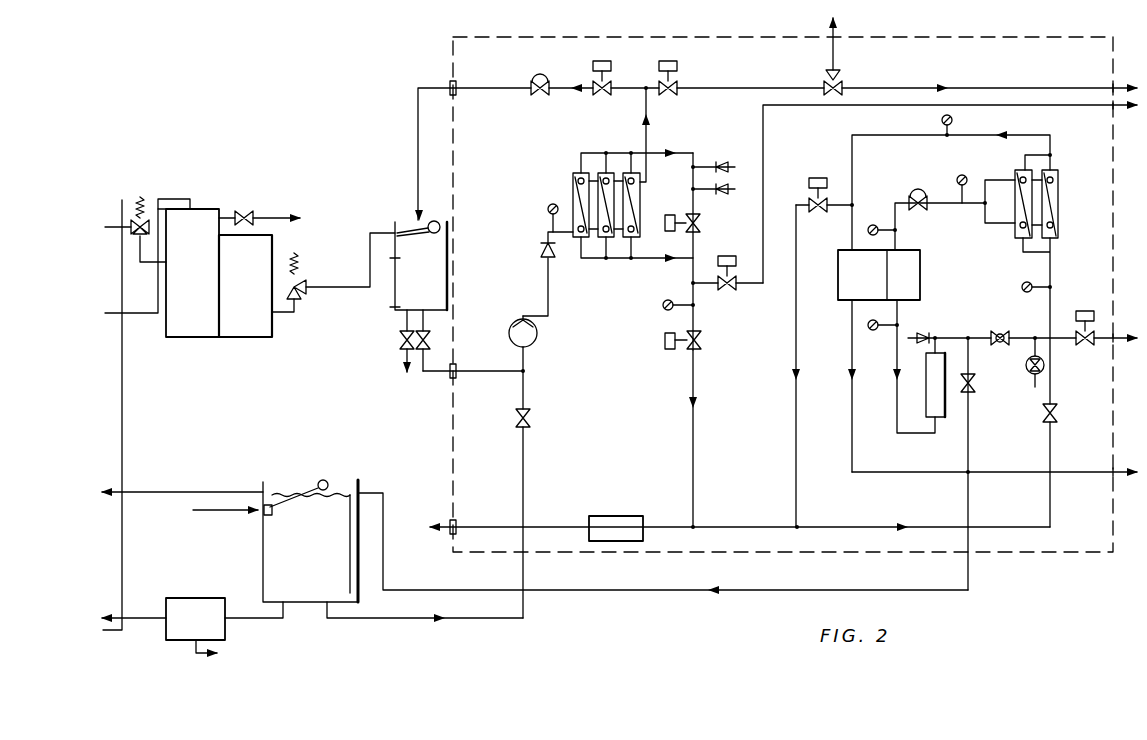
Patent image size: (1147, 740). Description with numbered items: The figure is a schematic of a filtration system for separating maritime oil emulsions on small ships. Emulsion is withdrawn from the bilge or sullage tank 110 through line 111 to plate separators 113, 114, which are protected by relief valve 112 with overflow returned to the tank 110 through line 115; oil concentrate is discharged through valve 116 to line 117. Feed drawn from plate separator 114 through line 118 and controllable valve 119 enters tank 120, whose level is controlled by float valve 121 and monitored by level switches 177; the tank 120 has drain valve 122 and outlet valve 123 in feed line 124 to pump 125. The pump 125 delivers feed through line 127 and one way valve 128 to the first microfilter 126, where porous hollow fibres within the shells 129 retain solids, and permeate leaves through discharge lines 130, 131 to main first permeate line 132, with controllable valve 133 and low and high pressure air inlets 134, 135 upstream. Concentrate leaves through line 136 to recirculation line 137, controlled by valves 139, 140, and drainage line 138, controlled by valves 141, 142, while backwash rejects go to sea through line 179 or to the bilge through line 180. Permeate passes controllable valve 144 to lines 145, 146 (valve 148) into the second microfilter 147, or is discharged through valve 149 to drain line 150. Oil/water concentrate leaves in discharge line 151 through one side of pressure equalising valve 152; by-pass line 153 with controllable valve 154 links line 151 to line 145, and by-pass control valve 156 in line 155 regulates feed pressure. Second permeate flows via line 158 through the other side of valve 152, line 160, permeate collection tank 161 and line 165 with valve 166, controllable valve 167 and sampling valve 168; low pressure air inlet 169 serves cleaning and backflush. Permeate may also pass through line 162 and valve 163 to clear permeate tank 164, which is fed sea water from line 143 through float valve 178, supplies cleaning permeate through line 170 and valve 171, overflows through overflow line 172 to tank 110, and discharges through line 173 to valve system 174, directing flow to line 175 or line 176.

The tank 110 is at (123, 434).
The line 111 is at (190, 199).
The relief valve 112 is at (147, 220).
The plate separator 113 is at (190, 340).
The plate separator 114 is at (240, 340).
The line 115 is at (112, 226).
The valve 116 is at (246, 210).
The line 117 is at (290, 213).
The line 118 is at (288, 314).
The controllable valve 119 is at (301, 278).
The tank 120 is at (395, 307).
The float valve 121 is at (439, 222).
The drain valve 122 is at (402, 352).
The outlet valve 123 is at (432, 340).
The feed line 124 is at (478, 378).
The pump 125 is at (537, 342).
The first microfilter 126 is at (550, 171).
The line 127 is at (548, 292).
The one way valve 128 is at (540, 250).
The shells 129 is at (638, 222).
The discharge line 130 is at (655, 150).
The discharge line 131 is at (636, 262).
The main first permeate line 132 is at (700, 384).
The controllable valve 133 is at (700, 224).
The low pressure air inlet 134 is at (708, 165).
The high pressure air inlet 135 is at (716, 197).
The line 136 is at (646, 108).
The recirculation line 137 is at (468, 88).
The drainage line 138 is at (725, 88).
The valve 139 is at (612, 80).
The valve 140 is at (546, 78).
The valve 141 is at (676, 80).
The valve 142 is at (843, 80).
The line 143 is at (193, 508).
The controllable valve 144 is at (688, 348).
The line 145 is at (723, 527).
The line 146 is at (830, 527).
The second microfilter 147 is at (1068, 215).
The valve 148 is at (1060, 416).
The valve 149 is at (728, 295).
The drain line 150 is at (768, 135).
The discharge line 151 is at (875, 135).
The pressure equalising valve 152 is at (838, 270).
The by-pass line 153 is at (798, 325).
The controllable valve 154 is at (808, 203).
The line 155 is at (667, 527).
The by-pass control valve 156 is at (590, 520).
The line 158 is at (896, 245).
The line 160 is at (897, 430).
The permeate collection tank 161 is at (926, 398).
The line 162 is at (968, 456).
The valve 163 is at (975, 383).
The clear permeate tank 164 is at (263, 548).
The line 165 is at (990, 335).
The valve 166 is at (1011, 362).
The controllable valve 167 is at (1087, 348).
The sampling valve 168 is at (1028, 374).
The low pressure air inlet 169 is at (914, 335).
The line 170 is at (523, 487).
The valve 171 is at (533, 418).
The overflow line 172 is at (168, 492).
The discharge line 173 is at (262, 625).
The valve system 174 is at (195, 619).
The line 175 is at (140, 618).
The line 176 is at (190, 655).
The level switches 177 is at (393, 262).
The float valve 178 is at (270, 500).
The line 179 is at (840, 28).
The line 180 is at (1105, 86).